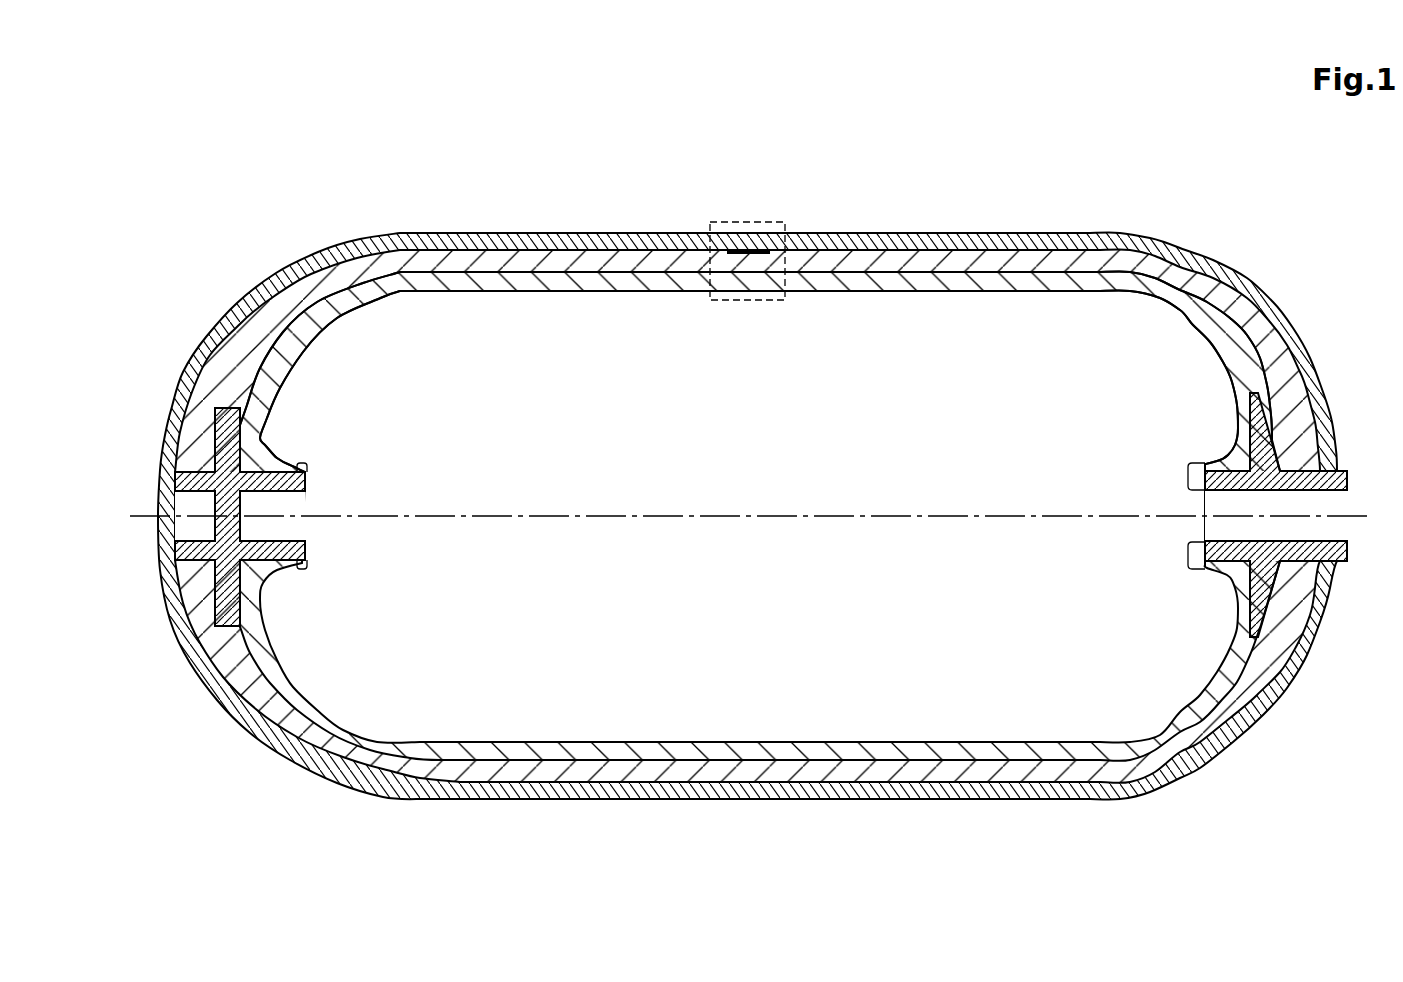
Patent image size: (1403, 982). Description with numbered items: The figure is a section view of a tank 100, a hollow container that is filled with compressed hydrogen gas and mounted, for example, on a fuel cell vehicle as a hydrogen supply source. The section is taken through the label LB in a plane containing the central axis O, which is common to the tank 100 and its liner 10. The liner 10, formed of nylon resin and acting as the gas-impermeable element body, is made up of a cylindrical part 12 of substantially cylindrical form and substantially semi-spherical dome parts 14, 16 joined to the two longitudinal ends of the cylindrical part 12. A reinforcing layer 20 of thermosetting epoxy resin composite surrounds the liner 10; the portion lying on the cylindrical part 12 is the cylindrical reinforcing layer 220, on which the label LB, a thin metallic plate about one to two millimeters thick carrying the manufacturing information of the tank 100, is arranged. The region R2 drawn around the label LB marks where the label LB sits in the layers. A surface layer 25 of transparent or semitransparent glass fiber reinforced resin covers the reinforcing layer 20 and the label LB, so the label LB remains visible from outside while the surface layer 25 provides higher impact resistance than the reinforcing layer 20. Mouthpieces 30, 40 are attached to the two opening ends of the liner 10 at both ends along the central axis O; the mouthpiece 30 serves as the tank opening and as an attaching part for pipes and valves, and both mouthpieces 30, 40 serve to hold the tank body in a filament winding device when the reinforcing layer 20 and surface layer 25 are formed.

The tank 100 is at (1270, 803).
The liner 10 is at (701, 491).
The cylindrical part 12 is at (522, 288).
The dome part 14 is at (295, 328).
The dome part 16 is at (1205, 313).
The reinforcing layer 20 is at (701, 491).
The cylindrical reinforcing layer 220 is at (668, 258).
The surface layer 25 is at (668, 790).
The mouthpiece 30 is at (1272, 588).
The mouthpiece 40 is at (165, 444).
The region of fiber layer boundary R2 is at (724, 222).
The label LB is at (748, 250).
The central axis O is at (764, 512).